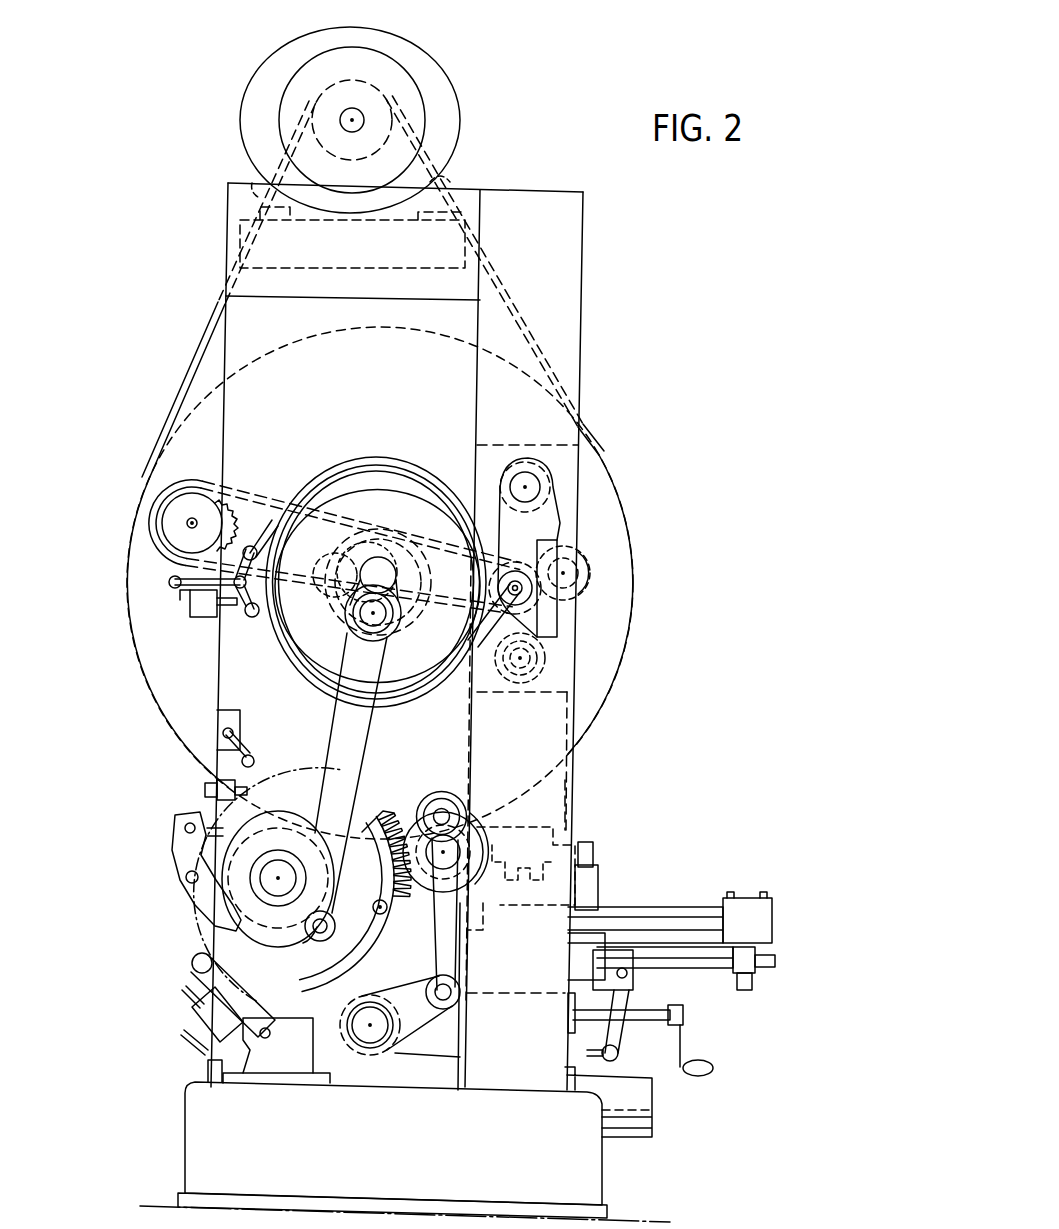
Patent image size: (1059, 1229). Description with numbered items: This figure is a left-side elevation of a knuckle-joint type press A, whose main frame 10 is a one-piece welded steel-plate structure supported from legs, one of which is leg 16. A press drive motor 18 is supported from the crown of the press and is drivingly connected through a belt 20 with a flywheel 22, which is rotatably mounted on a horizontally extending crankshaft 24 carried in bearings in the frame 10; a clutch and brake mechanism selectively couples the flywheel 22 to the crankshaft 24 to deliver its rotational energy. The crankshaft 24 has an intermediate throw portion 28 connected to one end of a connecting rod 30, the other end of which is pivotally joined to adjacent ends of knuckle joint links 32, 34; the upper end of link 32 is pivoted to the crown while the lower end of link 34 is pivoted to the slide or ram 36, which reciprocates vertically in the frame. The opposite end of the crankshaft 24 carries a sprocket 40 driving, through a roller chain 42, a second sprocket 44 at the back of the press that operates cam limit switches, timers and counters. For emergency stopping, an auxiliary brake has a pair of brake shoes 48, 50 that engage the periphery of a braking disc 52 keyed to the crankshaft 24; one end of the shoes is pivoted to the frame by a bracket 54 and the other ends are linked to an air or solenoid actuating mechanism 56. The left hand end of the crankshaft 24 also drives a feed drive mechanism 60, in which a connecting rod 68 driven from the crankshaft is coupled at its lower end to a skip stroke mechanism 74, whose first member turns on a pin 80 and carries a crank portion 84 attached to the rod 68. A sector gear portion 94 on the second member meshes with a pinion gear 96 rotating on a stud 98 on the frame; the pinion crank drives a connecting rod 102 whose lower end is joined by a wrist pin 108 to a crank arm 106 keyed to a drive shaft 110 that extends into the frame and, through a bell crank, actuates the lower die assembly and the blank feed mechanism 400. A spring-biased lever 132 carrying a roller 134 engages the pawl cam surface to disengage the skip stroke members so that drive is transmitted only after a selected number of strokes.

The knuckle-joint type press A is at (699, 298).
The main frame 10 is at (578, 352).
The leg 16 is at (185, 1140).
The press drive motor 18 is at (443, 94).
The belt 20 is at (430, 172).
The flywheel 22 is at (632, 513).
The crankshaft 24 is at (397, 580).
The throw portion 28 is at (333, 573).
The connecting rod 30 is at (436, 603).
The knuckle joint link 32 is at (587, 543).
The knuckle joint link 34 is at (567, 637).
The slide or ram 36 is at (482, 757).
The sprocket 40 is at (380, 543).
The roller chain 42 is at (230, 490).
The second sprocket 44 is at (197, 497).
The brake shoe 48 is at (407, 462).
The brake shoe 50 is at (417, 710).
The braking disc 52 is at (475, 540).
The bracket 54 is at (527, 568).
The actuating mechanism 56 is at (198, 618).
The feed drive mechanism 60 is at (161, 771).
The connecting rod 68 is at (330, 760).
The skip stroke mechanism 74 is at (384, 806).
The pin 80 is at (280, 892).
The crank portion 84 is at (290, 947).
The sector gear portion 94 is at (388, 947).
The pinion gear 96 is at (490, 830).
The stud 98 is at (483, 852).
The connecting rod 102 is at (458, 953).
The crank arm 106 is at (425, 1030).
The wrist pin or stud 108 is at (455, 1000).
The drive shaft 110 is at (370, 1060).
The lever 132 is at (226, 938).
The roller 134 is at (192, 965).
The blank feed mechanism 400 is at (754, 884).